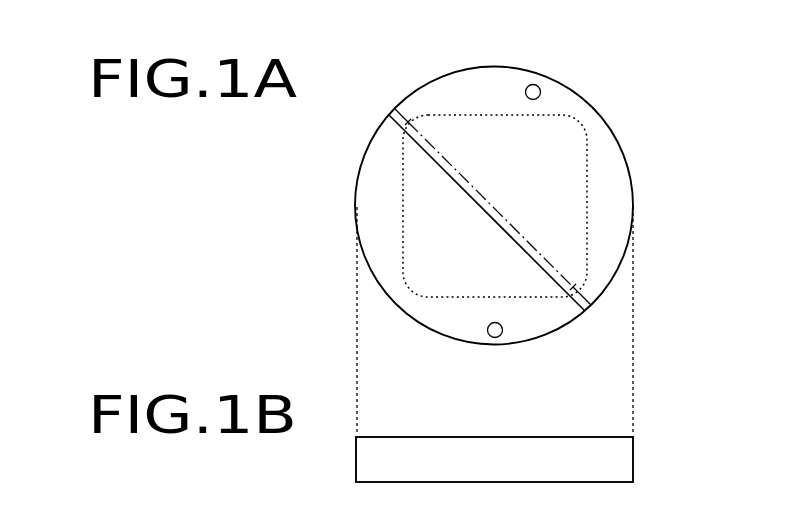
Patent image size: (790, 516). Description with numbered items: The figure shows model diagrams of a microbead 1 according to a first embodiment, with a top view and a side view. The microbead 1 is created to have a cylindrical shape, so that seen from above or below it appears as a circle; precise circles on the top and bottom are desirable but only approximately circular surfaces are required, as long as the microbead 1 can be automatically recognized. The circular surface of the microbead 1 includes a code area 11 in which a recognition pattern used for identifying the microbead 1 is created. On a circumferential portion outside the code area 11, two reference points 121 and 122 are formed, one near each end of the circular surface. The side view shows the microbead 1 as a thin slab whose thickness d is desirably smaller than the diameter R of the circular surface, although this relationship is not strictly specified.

In FIG. 1A, the microbead 1 is at (607, 122).
In FIG. 1A, the code area 11 is at (587, 265).
In FIG. 1A, the reference point 121 is at (495, 338).
In FIG. 1A, the reference point 122 is at (533, 84).
In FIG. 1A, the diameter of the circular surface R is at (472, 198).
In FIG. 1B, the thickness d is at (645, 437).